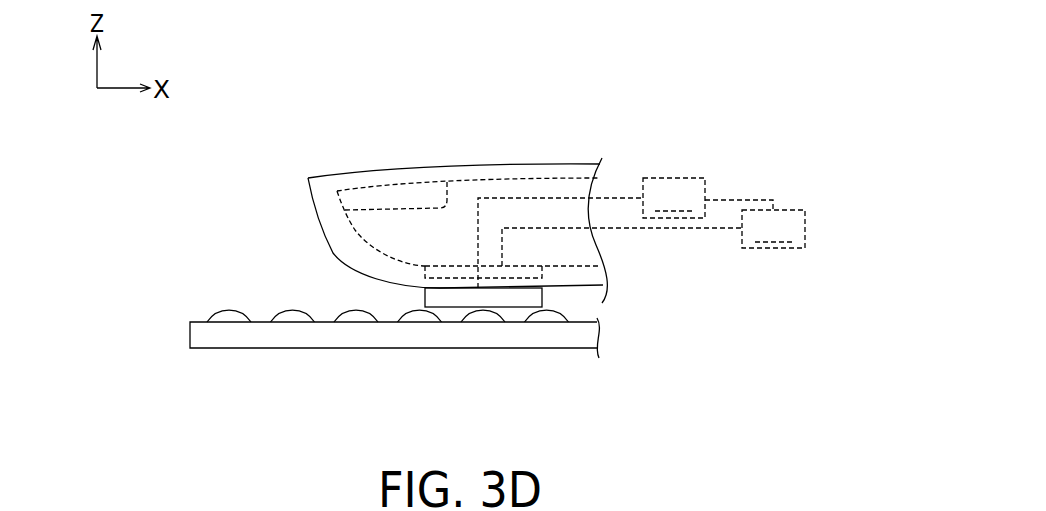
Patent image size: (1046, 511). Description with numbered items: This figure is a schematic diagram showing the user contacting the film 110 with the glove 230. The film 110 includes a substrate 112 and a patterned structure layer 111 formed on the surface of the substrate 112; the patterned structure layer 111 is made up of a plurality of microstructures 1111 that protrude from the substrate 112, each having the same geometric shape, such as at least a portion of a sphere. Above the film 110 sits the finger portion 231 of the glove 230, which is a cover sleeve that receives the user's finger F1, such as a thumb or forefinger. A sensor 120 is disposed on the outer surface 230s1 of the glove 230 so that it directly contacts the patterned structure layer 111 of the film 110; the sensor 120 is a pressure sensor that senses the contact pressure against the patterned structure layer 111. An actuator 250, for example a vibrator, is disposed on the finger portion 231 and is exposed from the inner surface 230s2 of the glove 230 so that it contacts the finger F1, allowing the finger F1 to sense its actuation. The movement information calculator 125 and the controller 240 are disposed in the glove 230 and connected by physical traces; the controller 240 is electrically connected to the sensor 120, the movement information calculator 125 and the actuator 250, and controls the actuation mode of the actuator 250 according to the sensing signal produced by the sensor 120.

The film 110 is at (102, 303).
The patterned structure layer 111 is at (190, 322).
The microstructure 1111 is at (230, 316).
The substrate 112 is at (197, 334).
The sensor 120 is at (542, 295).
The movement information calculator 125 is at (625, 233).
The glove 230 is at (597, 178).
The outer surface 230s1 is at (603, 303).
The inner surface 230s2 is at (560, 266).
The finger portion 231 is at (326, 211).
The controller 240 is at (653, 238).
The actuator 250 is at (425, 266).
The finger F1 is at (362, 205).